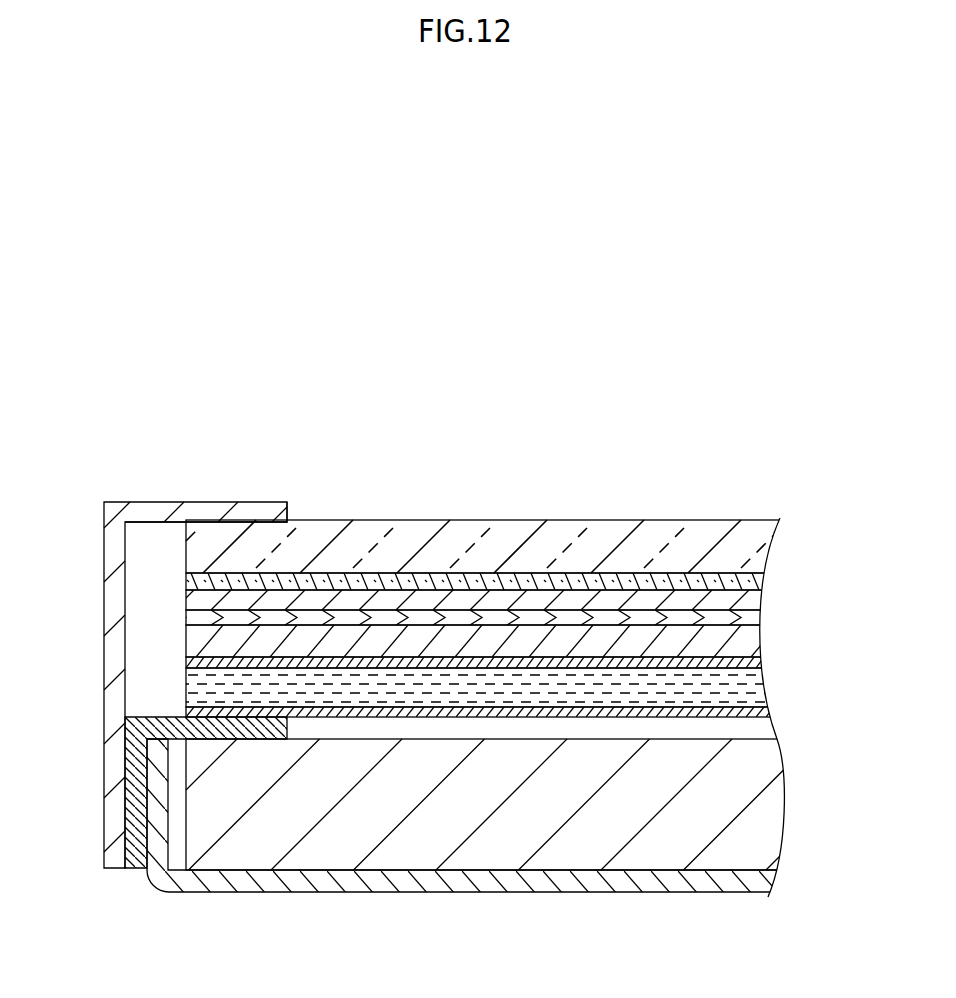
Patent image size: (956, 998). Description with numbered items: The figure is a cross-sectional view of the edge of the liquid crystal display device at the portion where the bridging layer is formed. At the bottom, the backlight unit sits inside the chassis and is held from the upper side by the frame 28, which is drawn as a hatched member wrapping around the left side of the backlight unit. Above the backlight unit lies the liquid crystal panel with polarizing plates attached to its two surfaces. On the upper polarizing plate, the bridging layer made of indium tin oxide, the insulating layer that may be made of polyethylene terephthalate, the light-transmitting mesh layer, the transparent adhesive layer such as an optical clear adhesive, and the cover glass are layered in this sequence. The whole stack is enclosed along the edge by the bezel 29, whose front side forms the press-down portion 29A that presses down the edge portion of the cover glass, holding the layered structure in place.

The frame 28 is at (145, 755).
The bezel 29 is at (113, 520).
The press-down portion 29A is at (218, 510).